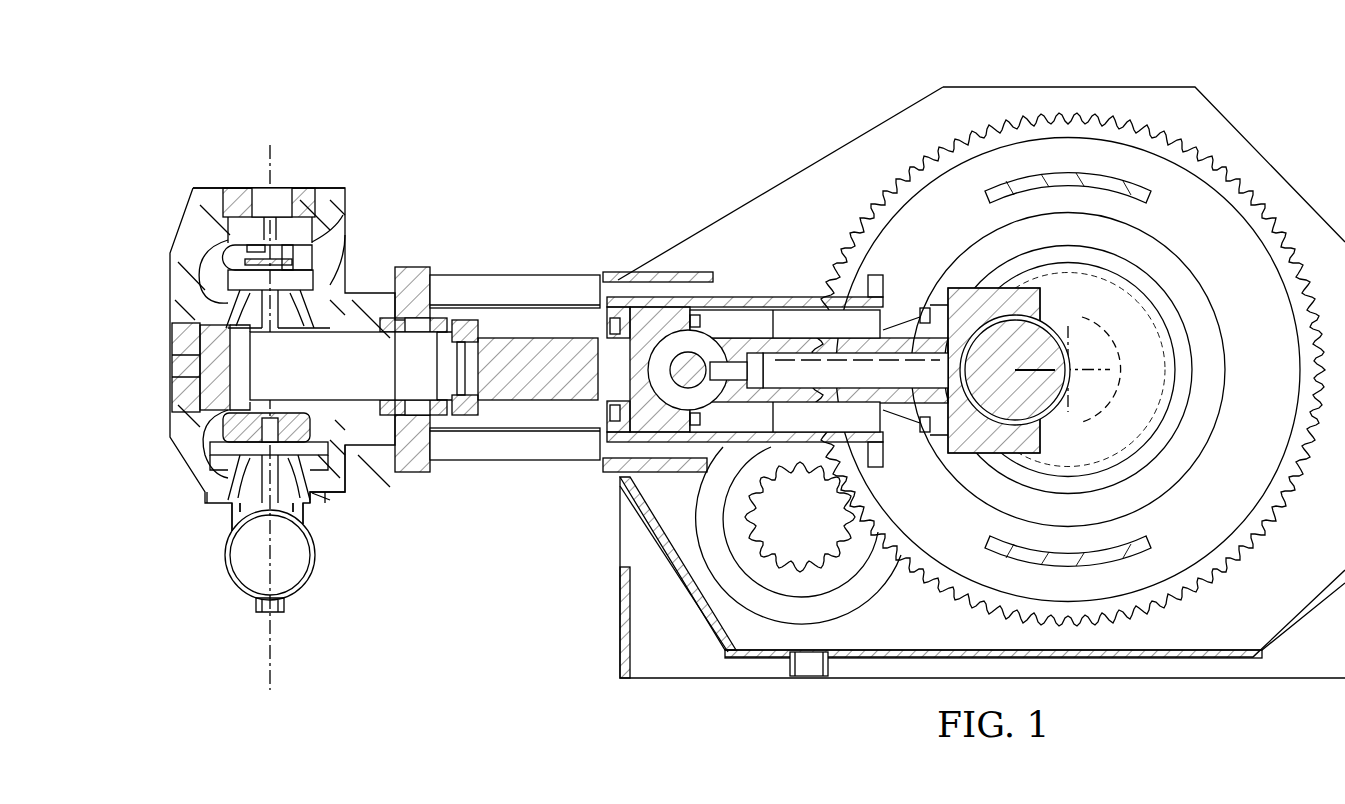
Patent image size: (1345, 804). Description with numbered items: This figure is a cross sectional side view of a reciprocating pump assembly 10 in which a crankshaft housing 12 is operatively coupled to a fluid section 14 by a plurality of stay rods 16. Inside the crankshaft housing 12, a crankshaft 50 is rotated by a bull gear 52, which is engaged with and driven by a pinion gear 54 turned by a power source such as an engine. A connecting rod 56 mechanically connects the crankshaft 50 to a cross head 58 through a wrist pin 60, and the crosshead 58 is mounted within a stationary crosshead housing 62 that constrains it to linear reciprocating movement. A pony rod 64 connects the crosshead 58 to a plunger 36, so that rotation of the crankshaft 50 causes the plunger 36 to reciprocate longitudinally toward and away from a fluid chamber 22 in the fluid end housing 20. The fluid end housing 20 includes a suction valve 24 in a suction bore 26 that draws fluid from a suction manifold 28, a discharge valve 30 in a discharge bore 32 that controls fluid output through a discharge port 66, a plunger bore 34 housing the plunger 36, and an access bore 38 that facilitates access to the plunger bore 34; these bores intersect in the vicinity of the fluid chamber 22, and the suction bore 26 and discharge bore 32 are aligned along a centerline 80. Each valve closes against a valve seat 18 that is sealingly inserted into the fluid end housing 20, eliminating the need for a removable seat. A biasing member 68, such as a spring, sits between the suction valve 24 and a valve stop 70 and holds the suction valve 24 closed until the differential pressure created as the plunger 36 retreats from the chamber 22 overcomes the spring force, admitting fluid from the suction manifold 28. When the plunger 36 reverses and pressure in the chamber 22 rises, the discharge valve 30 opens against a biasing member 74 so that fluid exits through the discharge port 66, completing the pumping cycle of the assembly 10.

The reciprocating pump assembly 10 is at (688, 140).
The crankshaft housing 12 is at (788, 175).
The fluid section 14 is at (355, 160).
The stay rods 16 is at (553, 275).
The valve seat 18 is at (207, 305).
The fluid end housing 20 is at (288, 158).
The fluid chamber 22 is at (232, 375).
The suction valve 24 is at (228, 505).
The suction bore 26 is at (330, 470).
The suction manifold 28 is at (312, 566).
The discharge valve 30 is at (330, 250).
The discharge bore 32 is at (312, 200).
The plunger bore 34 is at (320, 333).
The plunger 36 is at (300, 383).
The access bore 38 is at (180, 333).
The crankshaft 50 is at (950, 305).
The bull gear 52 is at (1230, 208).
The pinion gear 54 is at (816, 531).
The connecting rod 56 is at (825, 337).
The crosshead 58 is at (666, 322).
The wrist pin 60 is at (640, 384).
The crosshead housing 62 is at (745, 297).
The pony rod 64 is at (528, 395).
The discharge port 66 is at (212, 292).
The biasing member 68 is at (215, 462).
The valve stop 70 is at (202, 440).
The biasing member 74 is at (246, 250).
The centerline 80 is at (268, 156).